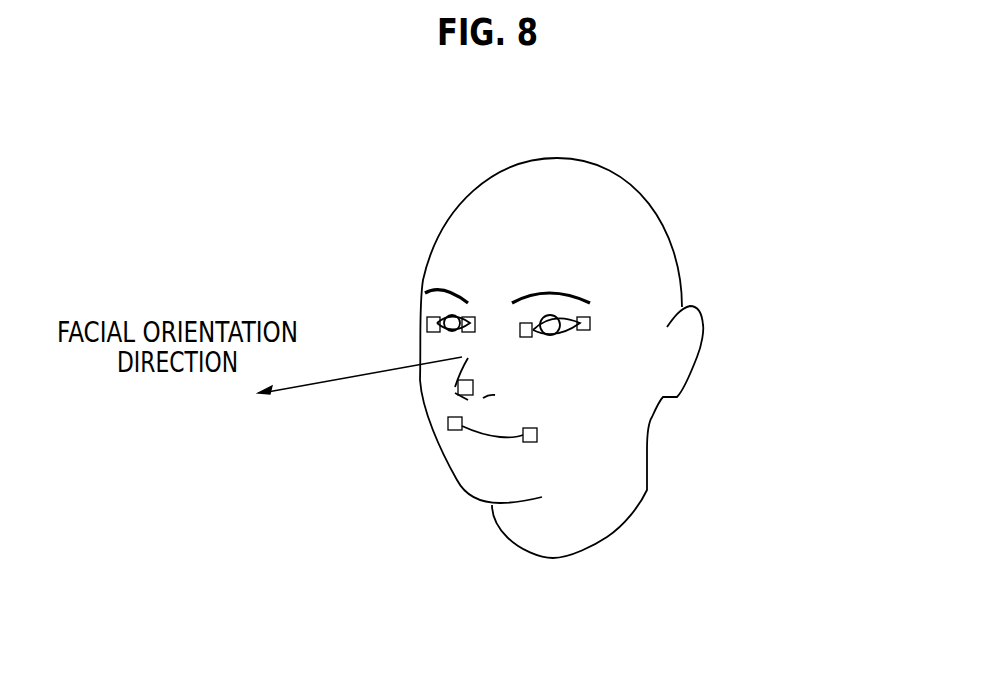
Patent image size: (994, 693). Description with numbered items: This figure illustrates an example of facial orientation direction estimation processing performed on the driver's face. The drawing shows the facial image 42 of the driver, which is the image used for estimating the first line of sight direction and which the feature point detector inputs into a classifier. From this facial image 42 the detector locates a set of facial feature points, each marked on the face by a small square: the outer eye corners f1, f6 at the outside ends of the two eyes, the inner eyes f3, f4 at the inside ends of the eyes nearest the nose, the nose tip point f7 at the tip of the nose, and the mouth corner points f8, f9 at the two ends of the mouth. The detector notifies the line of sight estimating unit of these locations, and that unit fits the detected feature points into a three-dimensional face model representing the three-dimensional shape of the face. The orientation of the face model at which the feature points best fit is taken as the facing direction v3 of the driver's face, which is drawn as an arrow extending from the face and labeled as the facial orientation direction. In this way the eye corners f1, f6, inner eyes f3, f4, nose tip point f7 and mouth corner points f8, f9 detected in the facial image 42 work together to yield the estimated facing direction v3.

The facial image 42 is at (692, 480).
The eye corner f1 is at (427, 323).
The inner eye f3 is at (475, 317).
The inner eye f4 is at (521, 323).
The eye corner f6 is at (590, 323).
The nose tip point f7 is at (458, 387).
The mouth corner point f8 is at (448, 425).
The mouth corner point f9 is at (537, 436).
The facing direction v3 is at (360, 393).